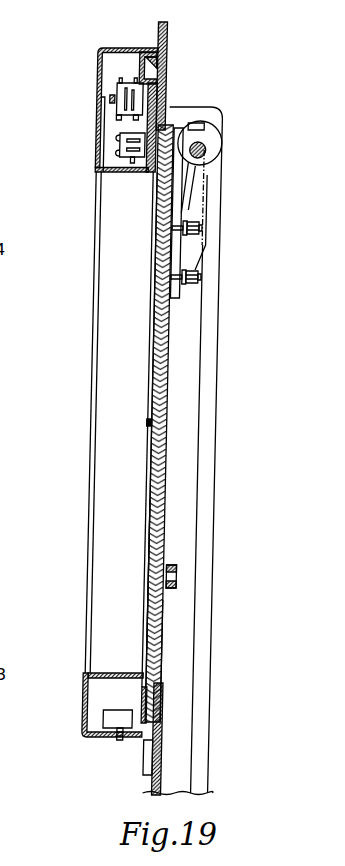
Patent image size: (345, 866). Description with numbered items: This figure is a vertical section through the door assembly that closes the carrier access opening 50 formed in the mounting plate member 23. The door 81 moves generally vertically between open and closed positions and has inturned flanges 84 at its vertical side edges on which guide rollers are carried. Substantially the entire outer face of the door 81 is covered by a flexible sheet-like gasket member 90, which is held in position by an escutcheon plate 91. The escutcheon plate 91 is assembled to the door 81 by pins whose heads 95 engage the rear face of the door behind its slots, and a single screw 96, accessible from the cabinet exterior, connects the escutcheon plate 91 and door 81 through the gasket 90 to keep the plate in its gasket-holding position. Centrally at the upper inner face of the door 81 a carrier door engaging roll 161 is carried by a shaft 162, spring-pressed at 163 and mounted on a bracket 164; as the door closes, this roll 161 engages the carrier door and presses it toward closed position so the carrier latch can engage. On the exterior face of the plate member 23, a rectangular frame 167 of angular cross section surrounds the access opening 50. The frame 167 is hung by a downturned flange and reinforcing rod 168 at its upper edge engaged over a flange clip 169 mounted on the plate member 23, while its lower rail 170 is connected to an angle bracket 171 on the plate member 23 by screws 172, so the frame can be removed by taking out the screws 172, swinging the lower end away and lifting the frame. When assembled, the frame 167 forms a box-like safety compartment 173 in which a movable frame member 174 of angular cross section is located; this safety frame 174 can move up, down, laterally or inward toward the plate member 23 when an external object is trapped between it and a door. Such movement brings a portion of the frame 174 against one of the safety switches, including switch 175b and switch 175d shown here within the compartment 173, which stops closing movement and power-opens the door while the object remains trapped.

The plate member 23 is at (141, 764).
The carrier access opening 50 is at (162, 667).
The door 81 is at (161, 759).
The inturned flanges 84 is at (195, 432).
The sheet-like gasket member 90 is at (157, 507).
The escutcheon plate 91 is at (155, 578).
The heads 95 is at (177, 571).
The screw 96 is at (146, 424).
The carrier door engaging roll 161 is at (219, 146).
The shaft 162 is at (206, 154).
The spring-pressed mounting 163 is at (189, 188).
The bracket 164 is at (201, 243).
The rectangular frame 167 is at (110, 47).
The reinforcing rod 168 is at (151, 55).
The flange clip 169 is at (137, 68).
The lower rail 170 is at (87, 738).
The angle bracket 171 is at (141, 706).
The screws 172 is at (118, 742).
The safety compartment 173 is at (113, 62).
The movable frame member 174 is at (108, 173).
The safety switch 175b is at (112, 99).
The safety switch 175d is at (132, 165).